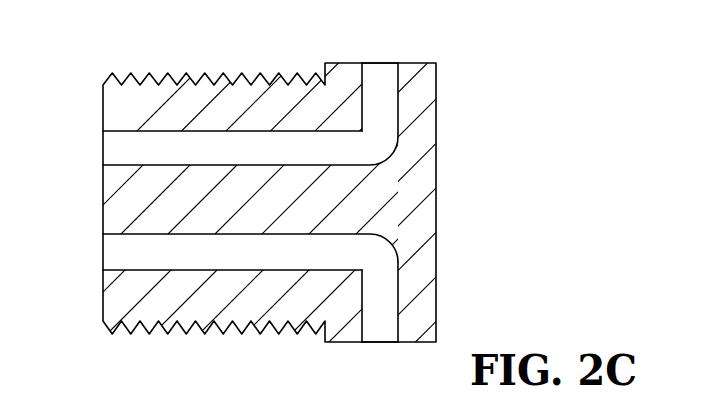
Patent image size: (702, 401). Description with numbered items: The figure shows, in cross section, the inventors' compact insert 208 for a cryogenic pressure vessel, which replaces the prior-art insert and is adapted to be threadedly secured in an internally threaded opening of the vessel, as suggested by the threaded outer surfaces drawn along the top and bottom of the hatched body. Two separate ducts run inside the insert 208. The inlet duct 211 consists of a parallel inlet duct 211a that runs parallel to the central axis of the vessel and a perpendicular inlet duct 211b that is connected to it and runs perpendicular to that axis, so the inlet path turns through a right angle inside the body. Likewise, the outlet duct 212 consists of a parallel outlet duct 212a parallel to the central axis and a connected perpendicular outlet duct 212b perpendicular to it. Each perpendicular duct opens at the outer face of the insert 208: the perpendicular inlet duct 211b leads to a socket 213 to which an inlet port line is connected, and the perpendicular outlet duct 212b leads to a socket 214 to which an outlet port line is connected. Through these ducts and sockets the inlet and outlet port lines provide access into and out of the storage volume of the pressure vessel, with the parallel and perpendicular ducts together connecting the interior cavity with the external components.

The insert 208 is at (437, 210).
The inlet duct 211 is at (267, 103).
The parallel inlet duct 211a is at (212, 147).
The perpendicular inlet duct 211b is at (382, 126).
The outlet duct 212 is at (278, 311).
The parallel outlet duct 212a is at (248, 260).
The perpendicular outlet duct 212b is at (385, 300).
The socket 213 is at (383, 63).
The socket 214 is at (378, 342).